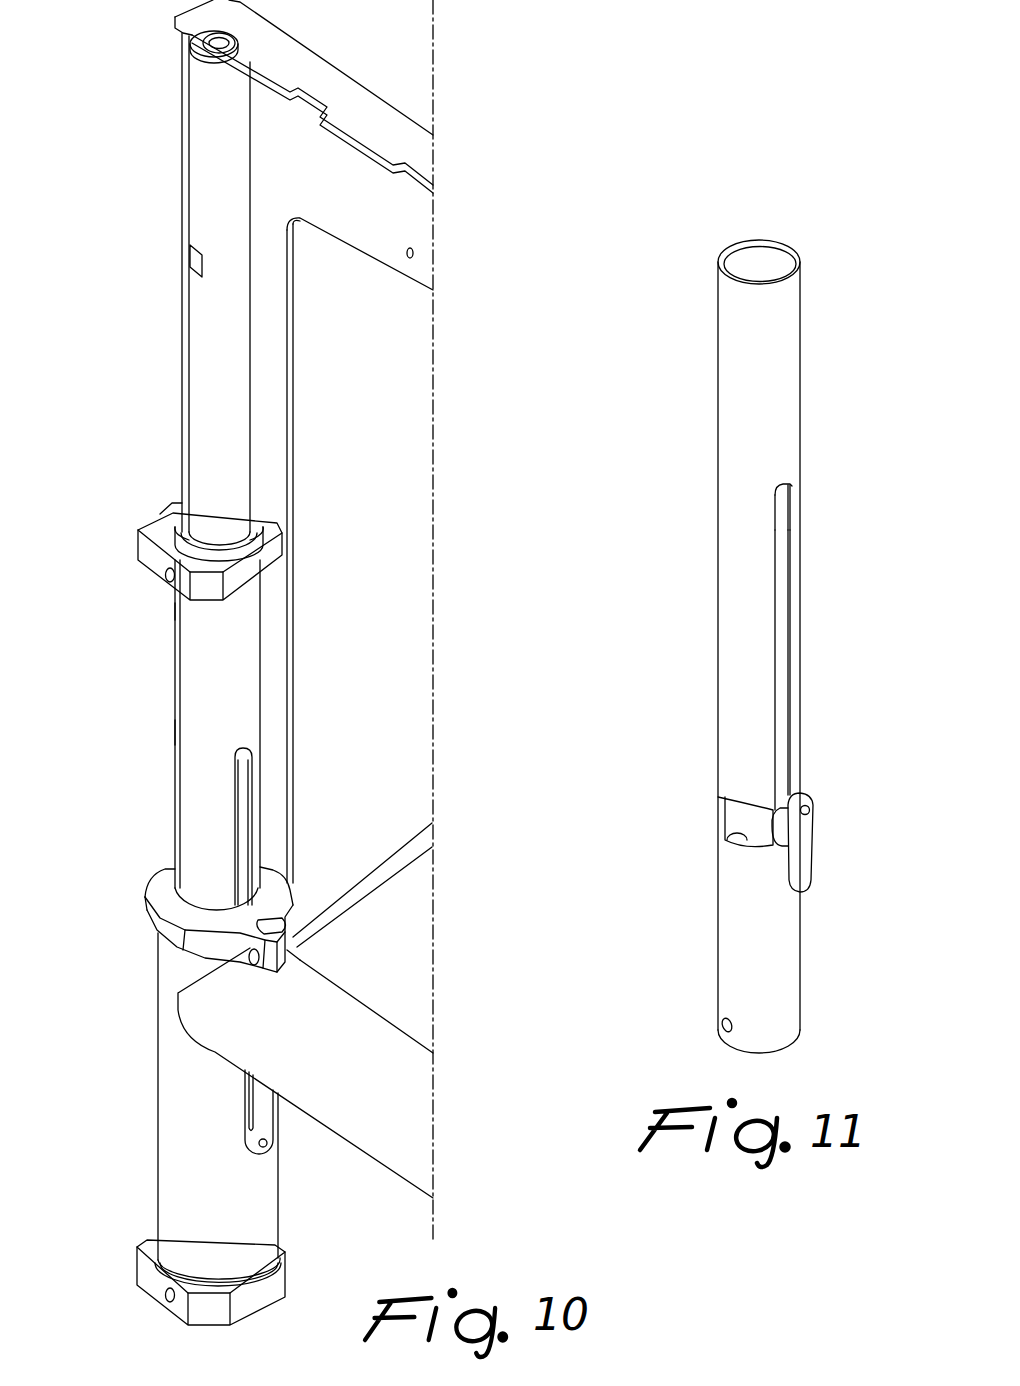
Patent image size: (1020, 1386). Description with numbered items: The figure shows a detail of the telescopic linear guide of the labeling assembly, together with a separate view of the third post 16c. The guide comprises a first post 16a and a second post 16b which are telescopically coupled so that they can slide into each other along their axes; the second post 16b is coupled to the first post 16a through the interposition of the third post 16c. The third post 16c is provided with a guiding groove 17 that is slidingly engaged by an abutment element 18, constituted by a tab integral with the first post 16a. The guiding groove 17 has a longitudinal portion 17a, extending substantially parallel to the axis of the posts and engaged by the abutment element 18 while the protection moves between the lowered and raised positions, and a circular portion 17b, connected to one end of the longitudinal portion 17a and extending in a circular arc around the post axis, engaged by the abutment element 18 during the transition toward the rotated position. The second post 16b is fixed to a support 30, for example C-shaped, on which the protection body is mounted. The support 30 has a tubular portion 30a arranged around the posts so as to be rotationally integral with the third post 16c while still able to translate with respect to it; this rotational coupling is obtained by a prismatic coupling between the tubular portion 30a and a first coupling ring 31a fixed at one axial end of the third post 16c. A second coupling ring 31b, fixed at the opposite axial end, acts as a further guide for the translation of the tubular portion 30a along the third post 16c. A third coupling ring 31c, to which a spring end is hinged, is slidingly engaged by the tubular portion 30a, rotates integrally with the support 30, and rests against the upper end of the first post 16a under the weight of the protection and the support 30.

In FIG. 10, the support 30 is at (374, 121).
In FIG. 10, the tubular portion 30a is at (265, 246).
In FIG. 10, the first post 16a is at (210, 1163).
In FIG. 10, the second post 16b is at (217, 377).
In FIG. 10, the third post 16c is at (217, 706).
In FIG. 11, the third post 16c is at (757, 371).
In FIG. 10, the guiding groove 17 is at (240, 795).
In FIG. 11, the guiding groove 17 is at (790, 618).
In FIG. 11, the longitudinal portion 17a is at (790, 510).
In FIG. 11, the circular portion 17b is at (750, 847).
In FIG. 11, the abutment element 18 is at (805, 838).
In FIG. 10, the first coupling ring 31a is at (150, 555).
In FIG. 10, the second coupling ring 31b is at (152, 1282).
In FIG. 10, the third coupling ring 31c is at (160, 927).